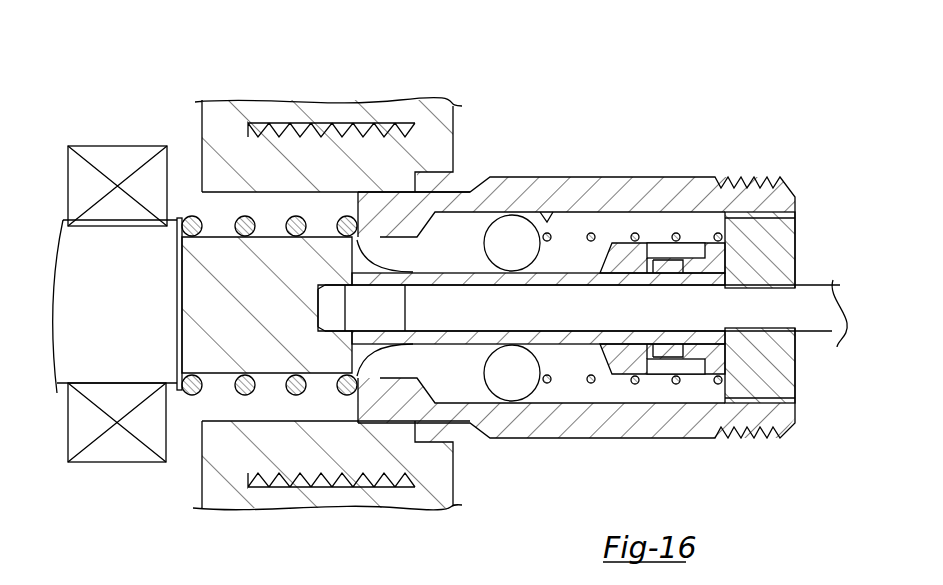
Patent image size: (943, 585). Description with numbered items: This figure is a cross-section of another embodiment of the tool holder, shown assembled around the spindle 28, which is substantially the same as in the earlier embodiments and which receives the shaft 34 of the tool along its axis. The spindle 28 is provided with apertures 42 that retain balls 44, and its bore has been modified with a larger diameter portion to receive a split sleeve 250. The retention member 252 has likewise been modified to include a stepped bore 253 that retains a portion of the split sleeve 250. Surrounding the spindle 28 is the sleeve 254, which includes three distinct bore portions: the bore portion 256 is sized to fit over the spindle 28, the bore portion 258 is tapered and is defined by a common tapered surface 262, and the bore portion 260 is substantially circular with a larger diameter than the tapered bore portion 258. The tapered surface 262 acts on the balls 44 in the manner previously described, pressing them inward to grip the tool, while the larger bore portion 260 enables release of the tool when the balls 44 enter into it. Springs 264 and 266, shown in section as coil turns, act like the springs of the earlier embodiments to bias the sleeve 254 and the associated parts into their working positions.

The spindle 28 is at (95, 332).
The shaft 34 is at (790, 313).
The apertures 42 is at (597, 265).
The balls 44 is at (318, 290).
The split sleeve 250 is at (350, 342).
The retention member 252 is at (780, 242).
The stepped bore 253 is at (683, 275).
The sleeve 254 is at (690, 190).
The bore portion 256 is at (380, 380).
The tapered bore portion 258 is at (542, 393).
The bore portion 260 is at (605, 440).
The tapered surface 262 is at (553, 222).
The spring 264 is at (188, 385).
The spring 266 is at (725, 380).